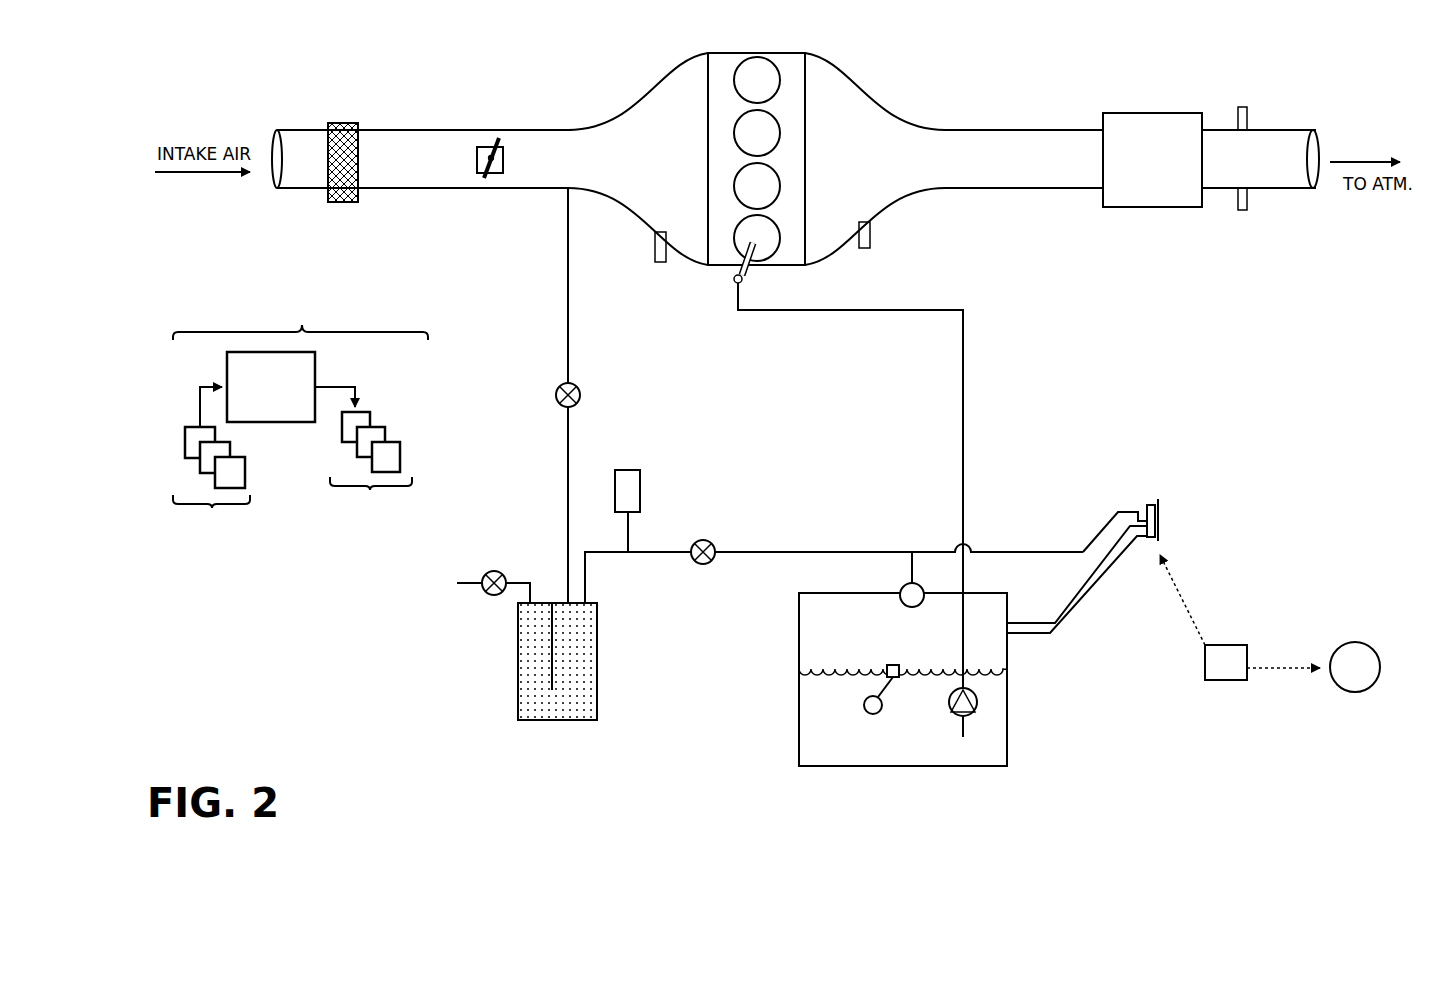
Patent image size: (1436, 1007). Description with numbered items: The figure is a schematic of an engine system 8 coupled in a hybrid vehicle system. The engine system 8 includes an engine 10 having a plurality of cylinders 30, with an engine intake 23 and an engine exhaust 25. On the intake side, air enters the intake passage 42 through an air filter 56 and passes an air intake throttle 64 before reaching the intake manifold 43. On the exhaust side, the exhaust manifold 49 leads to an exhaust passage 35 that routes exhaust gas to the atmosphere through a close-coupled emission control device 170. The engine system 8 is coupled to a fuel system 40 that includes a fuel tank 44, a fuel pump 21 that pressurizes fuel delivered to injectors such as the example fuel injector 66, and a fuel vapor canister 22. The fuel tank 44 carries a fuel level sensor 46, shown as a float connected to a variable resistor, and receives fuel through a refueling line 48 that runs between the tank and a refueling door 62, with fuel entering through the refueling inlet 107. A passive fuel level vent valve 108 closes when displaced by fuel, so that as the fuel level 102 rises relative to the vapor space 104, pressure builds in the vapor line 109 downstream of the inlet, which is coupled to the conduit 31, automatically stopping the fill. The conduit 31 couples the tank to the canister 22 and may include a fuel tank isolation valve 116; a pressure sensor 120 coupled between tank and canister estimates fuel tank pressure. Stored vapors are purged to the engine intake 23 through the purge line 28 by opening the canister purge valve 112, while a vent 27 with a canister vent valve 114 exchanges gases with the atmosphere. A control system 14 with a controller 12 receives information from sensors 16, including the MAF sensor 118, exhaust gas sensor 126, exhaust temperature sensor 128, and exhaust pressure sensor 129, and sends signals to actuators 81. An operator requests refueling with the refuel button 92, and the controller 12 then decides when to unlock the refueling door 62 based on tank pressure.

The engine system 8 is at (1160, 68).
The engine 10 is at (805, 141).
The controller 12 is at (773, 516).
The control system 14 is at (300, 415).
The sensors 16 is at (211, 488).
The fuel pump 21 is at (978, 704).
The fuel vapor canister 22 is at (590, 721).
The engine intake 23 is at (632, 86).
The engine exhaust 25 is at (917, 92).
The vent 27 is at (462, 584).
The purge line 28 is at (568, 325).
The cylinders 30 is at (778, 74).
The conduit 31 is at (812, 552).
The exhaust passage 35 is at (1293, 130).
The fuel system 40 is at (1050, 742).
The intake passage 42 is at (305, 190).
The intake manifold 43 is at (638, 159).
The fuel tank 44 is at (797, 628).
The fuel level sensor 46 is at (896, 680).
The refueling line 48 is at (1090, 610).
The exhaust manifold 49 is at (875, 159).
The air filter 56 is at (343, 122).
The refueling door 62 is at (1162, 522).
The air intake throttle 64 is at (503, 165).
The fuel injector 66 is at (757, 272).
The actuators 81 is at (374, 471).
The refuel button 92 is at (1355, 667).
The fuel level 102 is at (855, 677).
The vapor space 104 is at (903, 648).
The refueling inlet 107 is at (1152, 502).
The fuel level vent valve 108 is at (903, 584).
The vapor line 109 is at (1100, 516).
The canister purge valve 112 is at (578, 392).
The canister vent valve 114 is at (496, 574).
The fuel tank isolation valve 116 is at (705, 542).
The MAF sensor 118 is at (655, 243).
The pressure sensor 120 is at (640, 477).
The exhaust gas sensor 126 is at (870, 228).
The exhaust temperature sensor 128 is at (1242, 210).
The exhaust pressure sensor 129 is at (1242, 107).
The emission control device 170 is at (1152, 160).